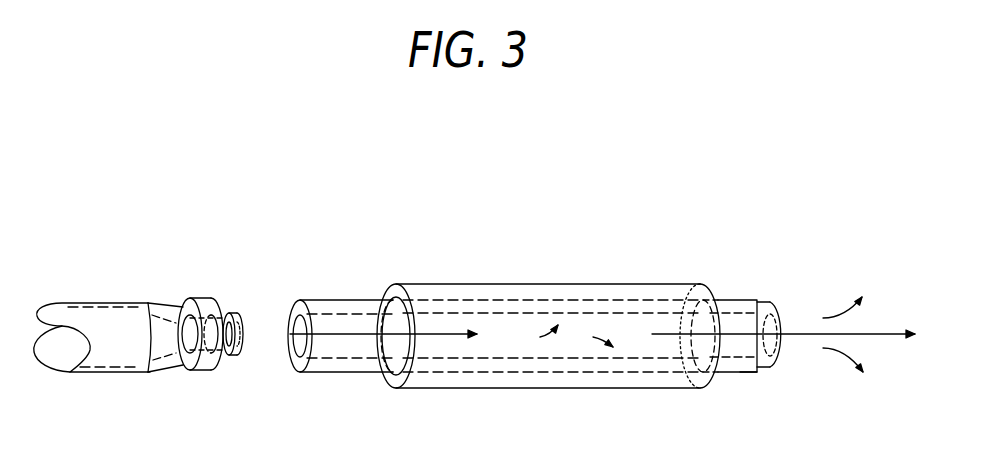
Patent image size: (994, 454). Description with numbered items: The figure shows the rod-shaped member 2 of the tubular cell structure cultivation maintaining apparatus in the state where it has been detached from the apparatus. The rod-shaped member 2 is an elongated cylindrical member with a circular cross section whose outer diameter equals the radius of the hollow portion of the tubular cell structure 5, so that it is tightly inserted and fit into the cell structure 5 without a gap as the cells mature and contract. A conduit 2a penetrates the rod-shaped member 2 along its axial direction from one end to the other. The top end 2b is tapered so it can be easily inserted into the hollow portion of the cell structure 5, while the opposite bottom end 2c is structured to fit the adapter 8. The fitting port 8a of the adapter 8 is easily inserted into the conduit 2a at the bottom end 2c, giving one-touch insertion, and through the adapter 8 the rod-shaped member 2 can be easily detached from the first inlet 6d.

The first inlet 6d is at (110, 305).
The adapter 8 is at (187, 300).
The fitting port 8a is at (235, 315).
The bottom end 2c is at (315, 302).
The cell structure 5 is at (647, 287).
The rod-shaped member 2 is at (730, 300).
The top end 2b is at (772, 302).
The conduit 2a is at (748, 357).